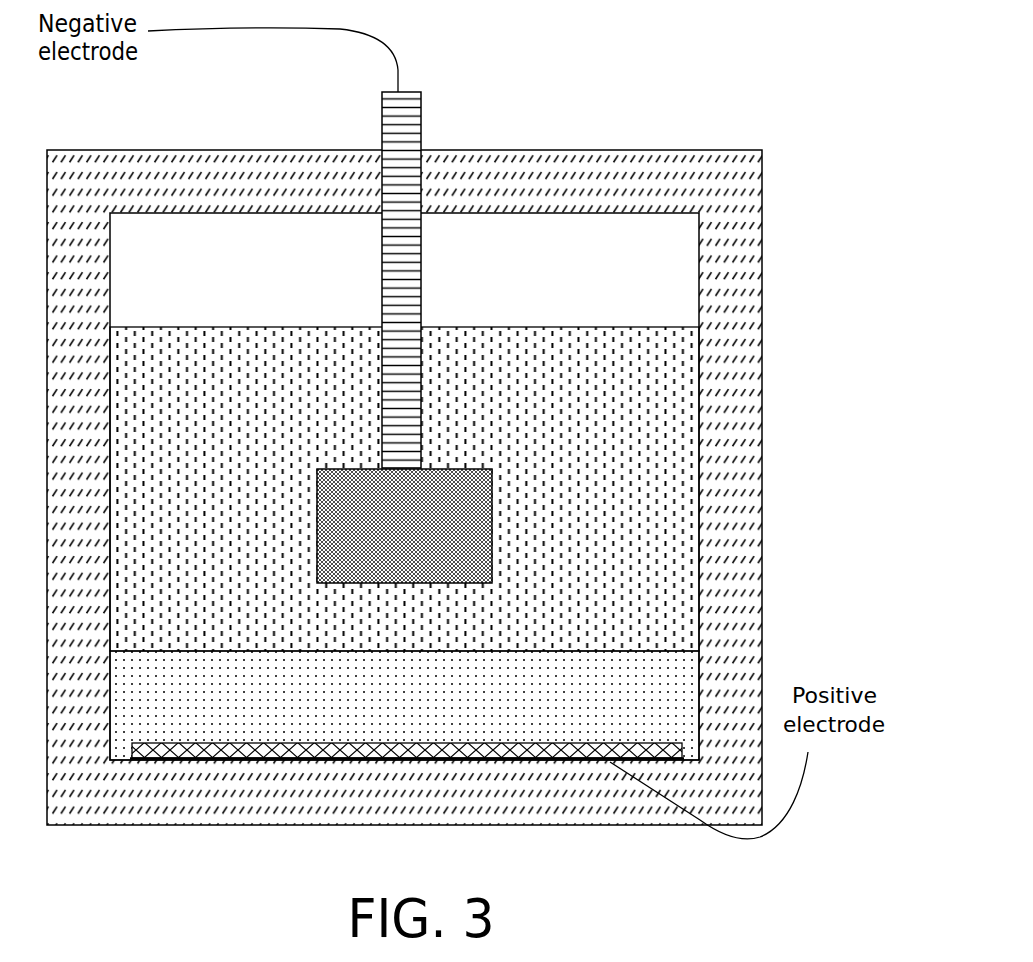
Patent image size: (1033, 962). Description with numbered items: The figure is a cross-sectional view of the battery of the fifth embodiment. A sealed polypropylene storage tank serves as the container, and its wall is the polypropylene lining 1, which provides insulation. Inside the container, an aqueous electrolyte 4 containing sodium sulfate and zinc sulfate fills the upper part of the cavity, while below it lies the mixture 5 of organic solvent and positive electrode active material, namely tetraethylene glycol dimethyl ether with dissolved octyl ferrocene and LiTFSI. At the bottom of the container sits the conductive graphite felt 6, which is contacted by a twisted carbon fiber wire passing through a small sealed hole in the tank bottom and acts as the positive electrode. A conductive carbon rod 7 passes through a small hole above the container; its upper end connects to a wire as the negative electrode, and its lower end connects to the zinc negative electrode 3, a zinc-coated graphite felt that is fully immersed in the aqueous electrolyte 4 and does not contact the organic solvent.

The polypropylene lining of the container 1 is at (404, 487).
The zinc negative electrode 3 is at (404, 526).
The aqueous electrolyte 4 is at (404, 489).
The mixture of organic solvent and positive electrode active material 5 is at (404, 705).
The graphite felt 6 is at (650, 747).
The carbon rod 7 is at (403, 330).